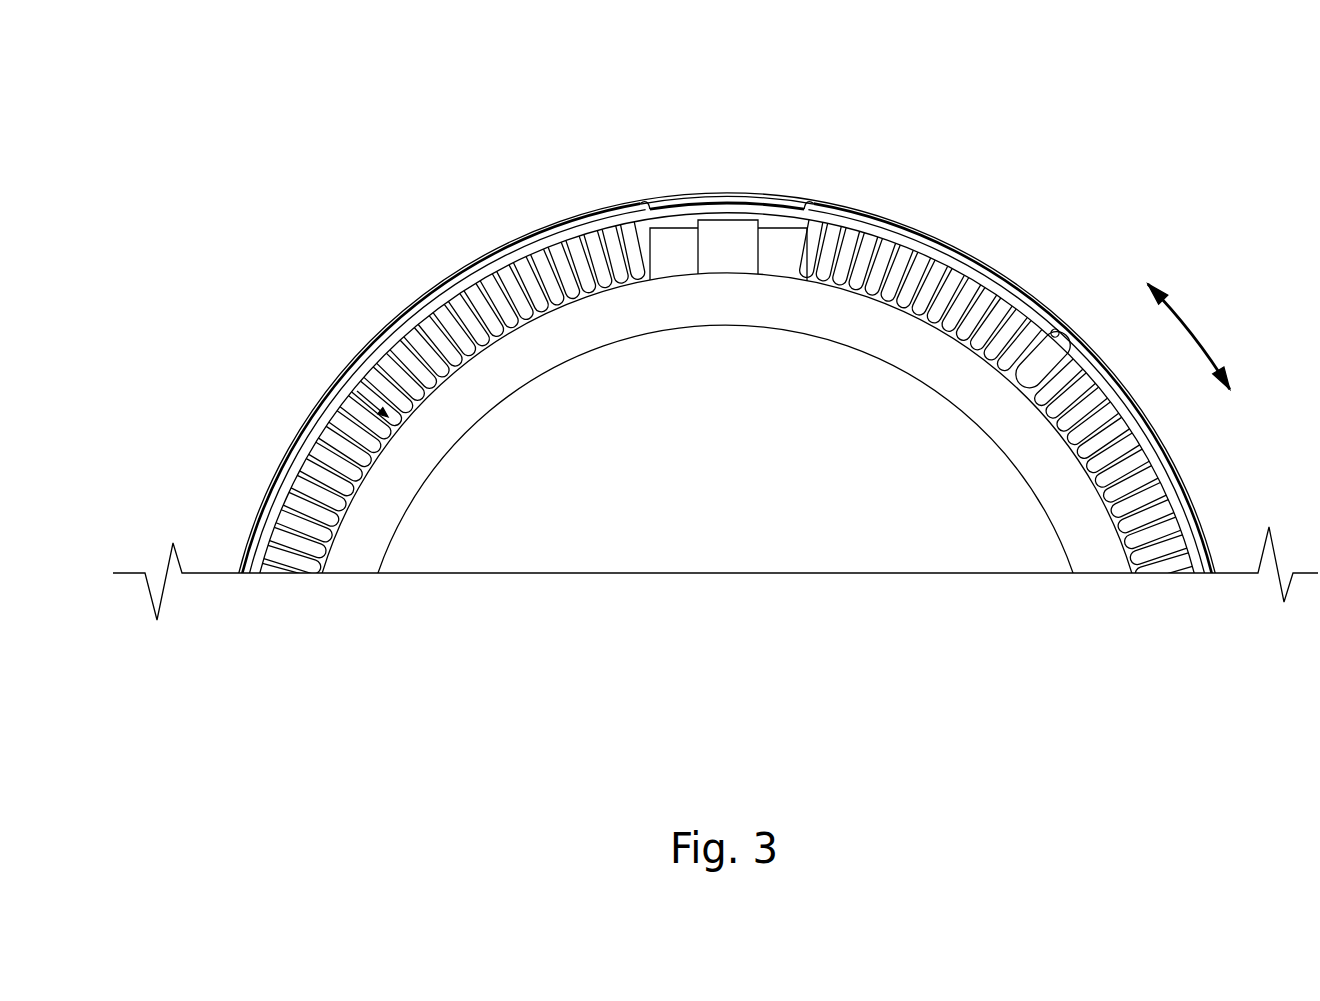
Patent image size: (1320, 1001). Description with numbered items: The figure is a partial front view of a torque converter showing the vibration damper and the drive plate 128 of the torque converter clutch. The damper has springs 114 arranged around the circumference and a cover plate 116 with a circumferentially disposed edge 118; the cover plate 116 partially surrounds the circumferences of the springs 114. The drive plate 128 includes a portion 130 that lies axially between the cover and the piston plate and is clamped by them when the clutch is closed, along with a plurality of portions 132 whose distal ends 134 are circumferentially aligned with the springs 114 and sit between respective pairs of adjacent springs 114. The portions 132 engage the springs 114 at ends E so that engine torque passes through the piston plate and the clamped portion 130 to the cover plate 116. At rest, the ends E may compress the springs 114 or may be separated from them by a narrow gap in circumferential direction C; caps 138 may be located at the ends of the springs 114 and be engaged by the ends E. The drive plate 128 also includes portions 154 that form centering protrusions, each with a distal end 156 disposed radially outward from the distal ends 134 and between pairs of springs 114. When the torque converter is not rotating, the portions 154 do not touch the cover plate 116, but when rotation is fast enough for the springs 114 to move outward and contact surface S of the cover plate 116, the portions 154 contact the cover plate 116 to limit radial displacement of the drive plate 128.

The springs 114 is at (443, 317).
The cover plate 116 is at (938, 219).
The circumferentially disposed edge 118 is at (1025, 314).
The drive plate 128 is at (350, 395).
The portion 130 is at (543, 343).
The portions 132 is at (662, 212).
The distal ends 134 is at (768, 224).
The caps 138 is at (640, 226).
The portions 154 is at (727, 236).
The distal end 156 is at (682, 226).
The ends E is at (652, 203).
The surface S is at (1070, 327).
The circumferential direction C is at (1193, 325).